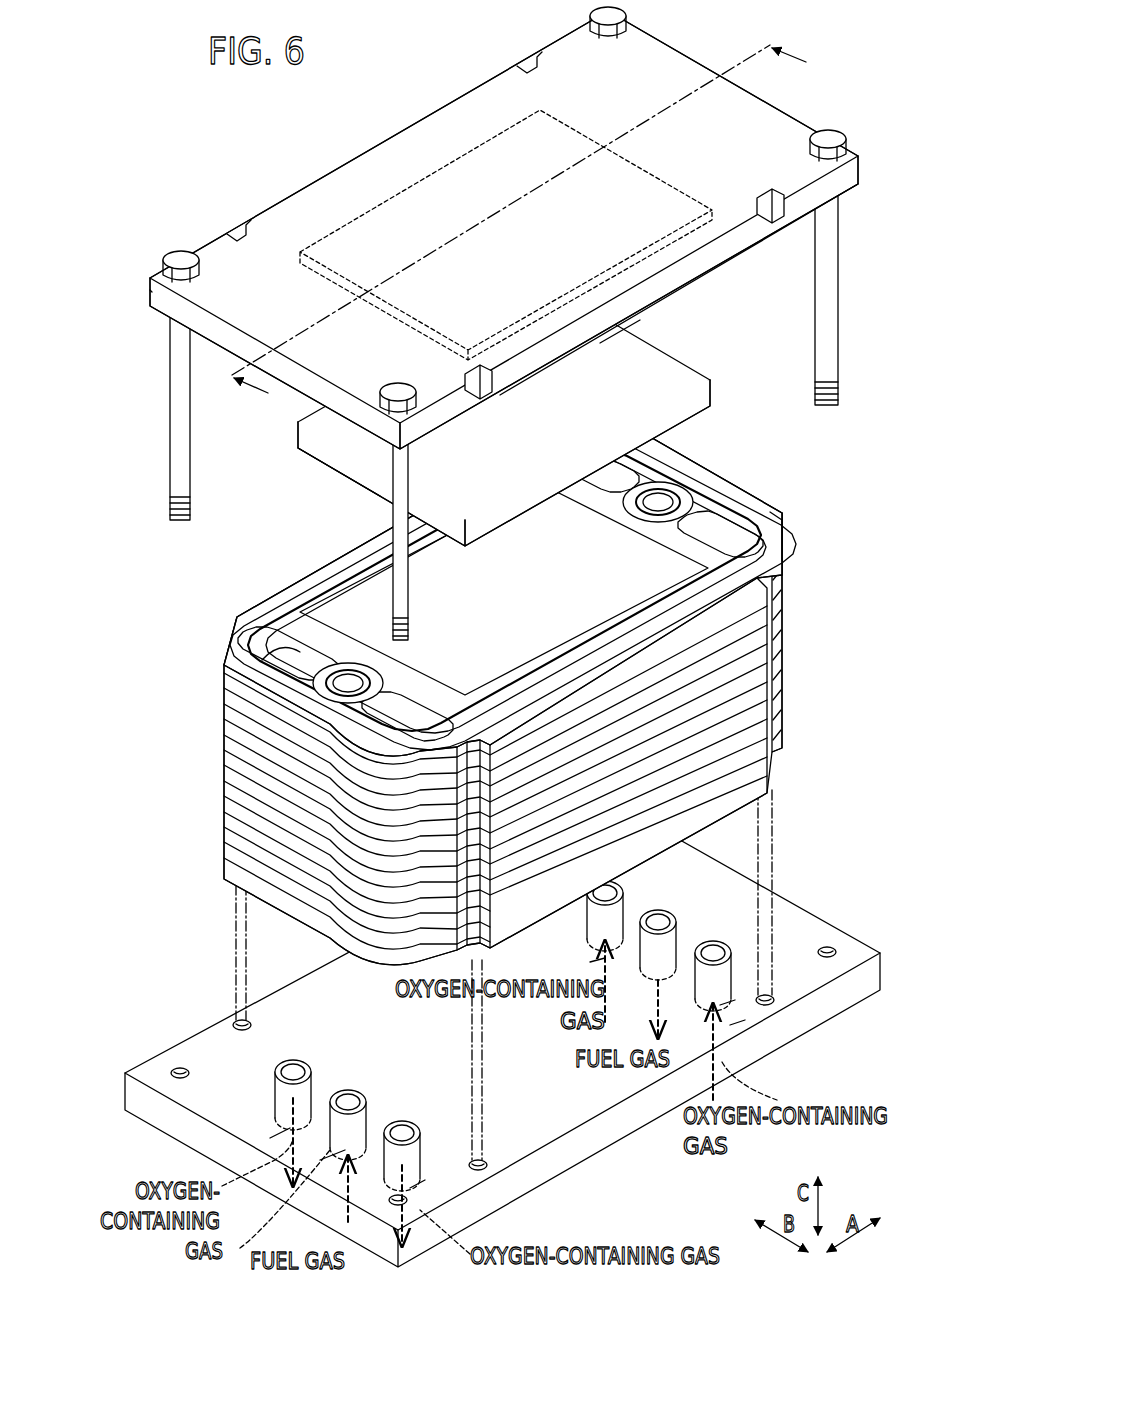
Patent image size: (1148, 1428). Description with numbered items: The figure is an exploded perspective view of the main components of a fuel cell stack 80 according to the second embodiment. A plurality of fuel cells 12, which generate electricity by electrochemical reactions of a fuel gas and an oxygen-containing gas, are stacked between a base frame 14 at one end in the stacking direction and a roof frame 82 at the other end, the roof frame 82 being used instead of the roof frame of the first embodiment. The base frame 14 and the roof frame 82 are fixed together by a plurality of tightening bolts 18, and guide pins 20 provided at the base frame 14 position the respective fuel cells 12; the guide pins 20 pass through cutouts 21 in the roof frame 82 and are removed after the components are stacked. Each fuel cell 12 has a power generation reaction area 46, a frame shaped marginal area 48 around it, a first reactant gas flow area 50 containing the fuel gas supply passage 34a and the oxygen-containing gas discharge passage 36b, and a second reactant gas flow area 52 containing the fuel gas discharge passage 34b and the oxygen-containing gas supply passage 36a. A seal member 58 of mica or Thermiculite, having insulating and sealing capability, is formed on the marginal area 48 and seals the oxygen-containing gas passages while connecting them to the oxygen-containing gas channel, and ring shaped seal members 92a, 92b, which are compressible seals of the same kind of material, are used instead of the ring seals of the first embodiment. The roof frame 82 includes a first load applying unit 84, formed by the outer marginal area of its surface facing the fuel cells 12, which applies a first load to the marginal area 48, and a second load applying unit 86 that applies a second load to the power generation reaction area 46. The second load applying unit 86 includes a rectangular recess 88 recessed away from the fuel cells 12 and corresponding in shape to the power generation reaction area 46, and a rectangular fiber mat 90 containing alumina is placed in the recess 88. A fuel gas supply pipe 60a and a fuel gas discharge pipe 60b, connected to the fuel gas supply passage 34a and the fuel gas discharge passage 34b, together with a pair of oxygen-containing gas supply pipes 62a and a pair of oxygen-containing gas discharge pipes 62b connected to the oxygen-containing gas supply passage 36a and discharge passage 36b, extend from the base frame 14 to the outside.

The fuel cell stack 80 is at (424, 65).
The roof frame 82 is at (504, 230).
The first load applying unit 84 is at (732, 250).
The second load applying unit 86 is at (702, 343).
The recess 88 is at (668, 182).
The tightening bolts 18 is at (828, 138).
The cutouts 21 is at (778, 225).
The fiber mat 90 is at (338, 455).
The power generation reaction area 46 is at (499, 558).
The marginal area 48 is at (505, 582).
The first reactant gas flow area 50 is at (290, 665).
The second reactant gas flow area 52 is at (702, 482).
The seal member 58 is at (781, 508).
The ring shaped seal member 92a is at (375, 680).
The ring shaped seal member 92b is at (645, 515).
The fuel cells 12 is at (388, 892).
The base frame 14 is at (632, 1140).
The guide pins 20 is at (776, 820).
The fuel gas supply passage 34a is at (349, 1100).
The fuel gas discharge passage 34b is at (660, 920).
The oxygen-containing gas supply passage 36a is at (606, 892).
The oxygen-containing gas discharge passage 36b is at (294, 1070).
The fuel gas supply pipe 60a is at (332, 1152).
The fuel gas discharge pipe 60b is at (728, 1003).
The oxygen-containing gas supply pipes 62a is at (595, 960).
The oxygen-containing gas discharge pipes 62b is at (278, 1135).